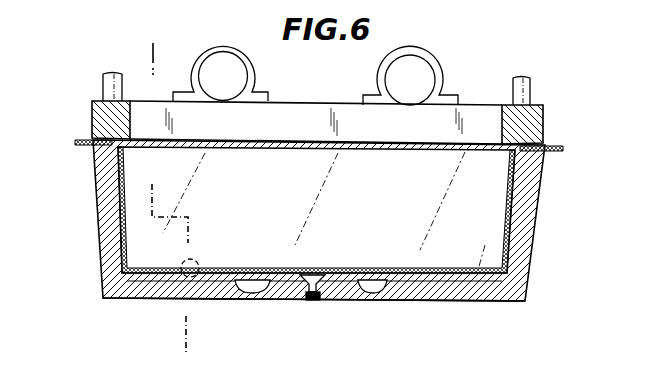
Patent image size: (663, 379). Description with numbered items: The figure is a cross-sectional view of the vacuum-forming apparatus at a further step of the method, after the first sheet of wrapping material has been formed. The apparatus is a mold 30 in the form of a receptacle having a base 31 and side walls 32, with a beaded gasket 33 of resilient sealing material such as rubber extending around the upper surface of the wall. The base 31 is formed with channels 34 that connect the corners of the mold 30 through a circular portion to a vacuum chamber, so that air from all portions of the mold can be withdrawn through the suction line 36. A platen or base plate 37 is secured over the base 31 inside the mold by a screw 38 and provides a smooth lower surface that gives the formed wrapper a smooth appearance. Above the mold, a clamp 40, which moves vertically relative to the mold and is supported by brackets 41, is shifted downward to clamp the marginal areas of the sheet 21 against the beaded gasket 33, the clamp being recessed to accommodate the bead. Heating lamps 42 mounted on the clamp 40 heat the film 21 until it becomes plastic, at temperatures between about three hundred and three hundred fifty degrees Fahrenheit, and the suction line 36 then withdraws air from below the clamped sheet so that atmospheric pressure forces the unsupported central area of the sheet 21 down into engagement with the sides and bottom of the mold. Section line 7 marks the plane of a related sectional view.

The section line 7- 7 is at (146, 48).
The sheet 21 is at (352, 276).
The mold 30 is at (77, 230).
The base 31 is at (142, 300).
The side walls 32 is at (530, 226).
The beaded gasket 33 is at (541, 164).
The channels 34 is at (246, 290).
The suction line 36 is at (198, 260).
The base plate 37 is at (432, 301).
The screw 38 is at (305, 302).
The clamp 40 is at (106, 108).
The brackets 41 is at (105, 80).
The heating lamps 42 is at (248, 58).